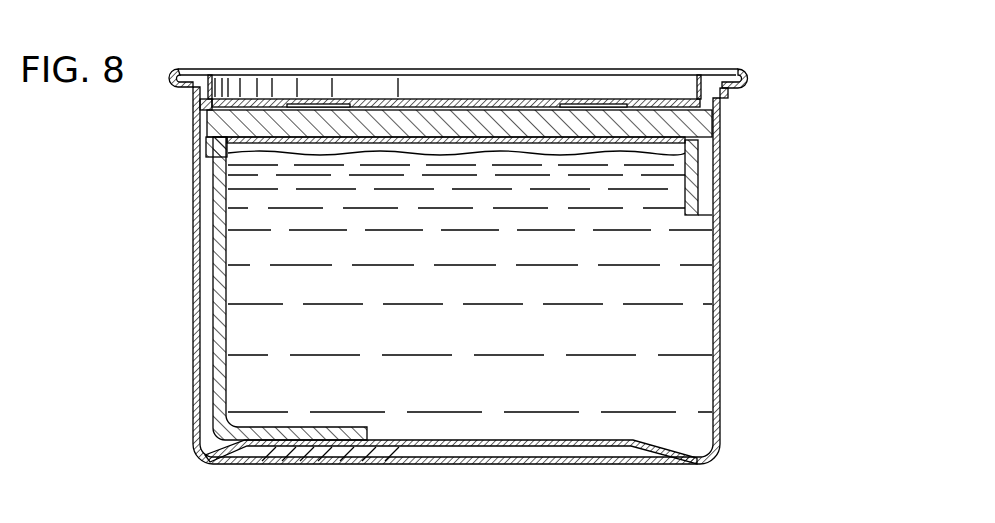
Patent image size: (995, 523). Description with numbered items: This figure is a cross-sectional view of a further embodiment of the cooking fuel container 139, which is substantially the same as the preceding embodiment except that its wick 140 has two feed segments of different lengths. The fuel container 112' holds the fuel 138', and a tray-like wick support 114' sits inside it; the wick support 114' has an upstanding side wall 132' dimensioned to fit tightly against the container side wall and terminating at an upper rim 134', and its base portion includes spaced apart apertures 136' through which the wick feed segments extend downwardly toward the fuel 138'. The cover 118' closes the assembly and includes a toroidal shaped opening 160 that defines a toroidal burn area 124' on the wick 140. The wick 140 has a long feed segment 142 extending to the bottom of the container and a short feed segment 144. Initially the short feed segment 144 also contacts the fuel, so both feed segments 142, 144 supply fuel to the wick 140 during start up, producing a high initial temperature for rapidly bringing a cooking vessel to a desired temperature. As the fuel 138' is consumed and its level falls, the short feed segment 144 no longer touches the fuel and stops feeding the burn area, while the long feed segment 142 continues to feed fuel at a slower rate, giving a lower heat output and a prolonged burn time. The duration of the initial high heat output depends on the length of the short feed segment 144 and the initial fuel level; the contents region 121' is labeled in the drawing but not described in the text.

The fuel container 112' is at (498, 275).
The wick support 114' is at (150, 121).
The cover 118' is at (464, 62).
The liquid contents 121' is at (470, 281).
The toroidal burn area 124' is at (456, 66).
The side wall 132' is at (766, 129).
The upper rim 134' is at (771, 107).
The apertures 136' is at (454, 191).
The fuel 138' is at (406, 281).
The fuel container 139 is at (160, 254).
The wick 140 is at (457, 120).
The long feed segment 142 is at (222, 283).
The short feed segment 144 is at (717, 228).
The toroidal shaped opening 160 is at (318, 98).